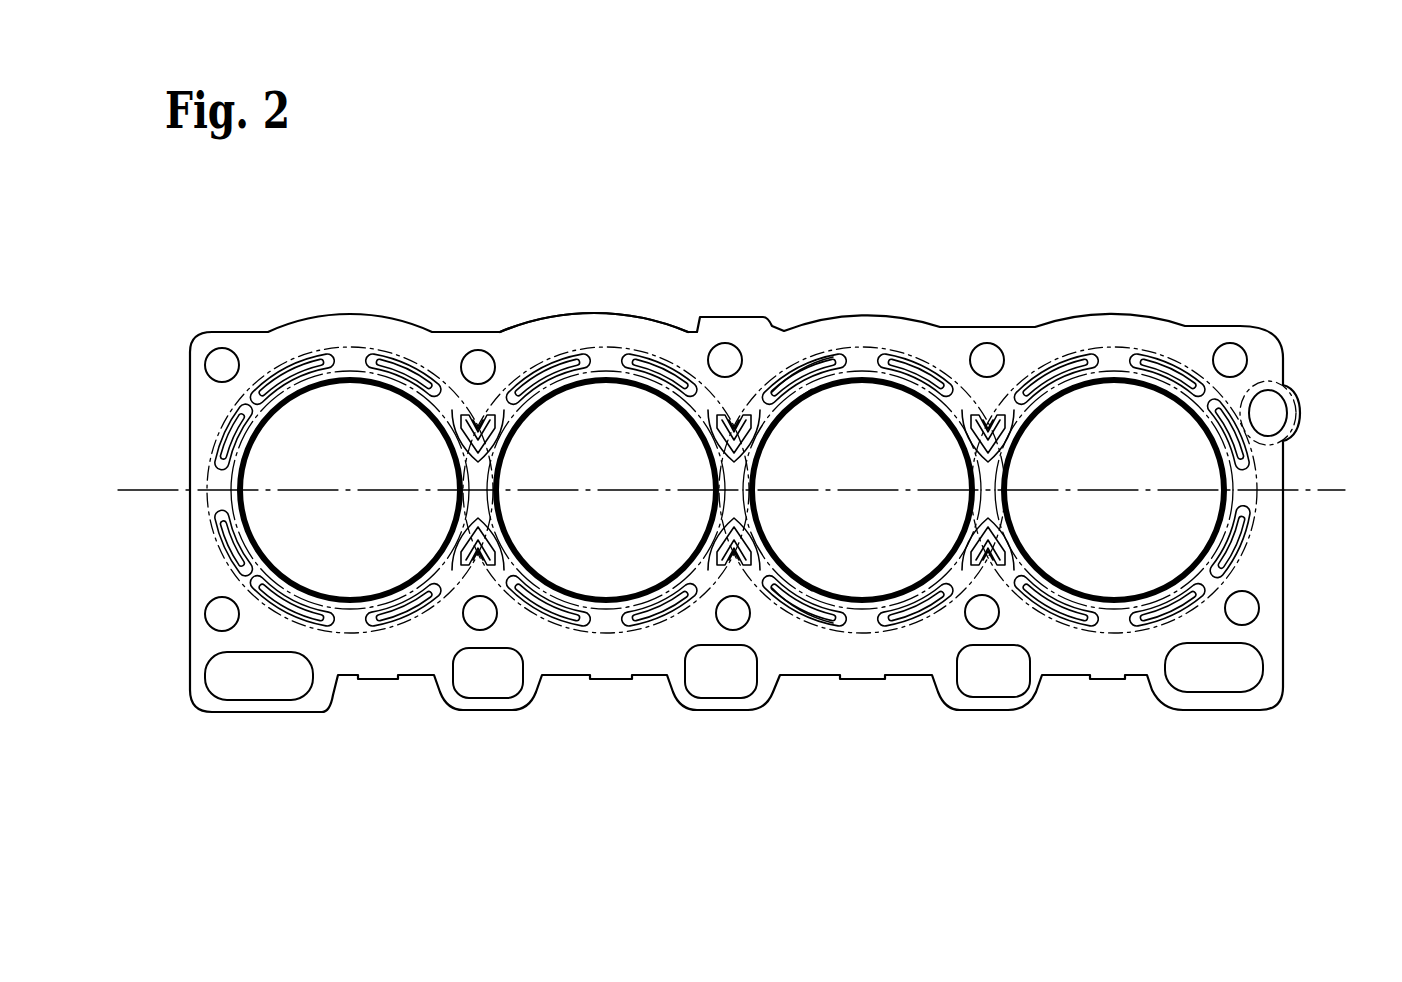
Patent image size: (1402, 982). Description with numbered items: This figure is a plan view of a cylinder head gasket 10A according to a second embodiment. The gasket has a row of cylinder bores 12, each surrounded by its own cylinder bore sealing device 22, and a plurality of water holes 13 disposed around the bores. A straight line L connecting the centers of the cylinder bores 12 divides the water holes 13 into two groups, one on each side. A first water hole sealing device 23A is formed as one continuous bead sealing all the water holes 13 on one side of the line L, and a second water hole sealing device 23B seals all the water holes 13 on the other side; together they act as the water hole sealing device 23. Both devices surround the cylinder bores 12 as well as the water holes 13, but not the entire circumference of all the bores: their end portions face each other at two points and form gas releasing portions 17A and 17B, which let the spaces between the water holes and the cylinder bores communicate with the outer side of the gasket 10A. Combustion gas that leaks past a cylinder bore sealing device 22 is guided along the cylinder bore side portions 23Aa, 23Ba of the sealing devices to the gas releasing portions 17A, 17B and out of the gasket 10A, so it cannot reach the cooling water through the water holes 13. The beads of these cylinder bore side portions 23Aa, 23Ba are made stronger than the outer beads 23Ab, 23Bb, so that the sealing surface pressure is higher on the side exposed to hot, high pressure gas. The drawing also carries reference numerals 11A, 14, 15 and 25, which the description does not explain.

The cylinder head gasket 10A is at (758, 295).
The gasket plate 11A is at (612, 318).
The cylinder bore 12 is at (877, 410).
The water hole 13 is at (728, 412).
The bolt hole 14 is at (1233, 357).
The water hole 15 is at (1273, 417).
The gas releasing portion 17A is at (217, 507).
The gas releasing portion 17B is at (1245, 490).
The cylinder bore sealing device 22 is at (900, 612).
The water hole sealing device 23 is at (968, 358).
The first water hole sealing device 23A is at (526, 345).
The cylinder bore side portion of first water hole sealing device 23Aa is at (809, 386).
The outer bead of first water hole sealing device 23Ab is at (848, 335).
The second water hole sealing device 23B is at (594, 642).
The cylinder bore side portion of second water hole sealing device 23Ba is at (790, 560).
The outer bead of second water hole sealing device 23Bb is at (800, 614).
The flange around water hole 25 is at (1298, 402).
The straight line L is at (148, 478).